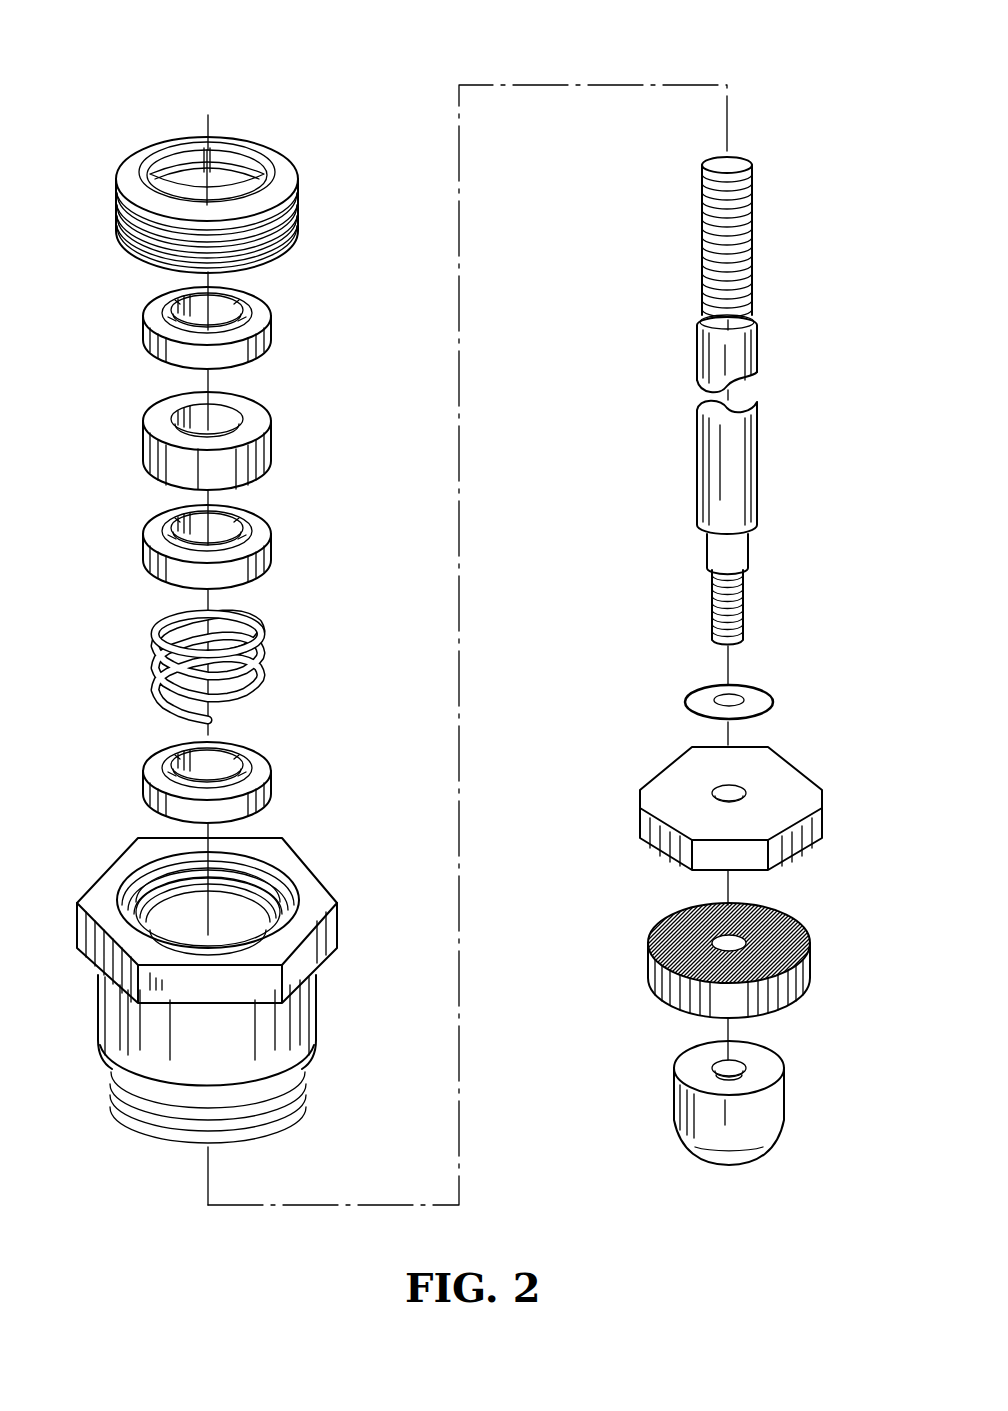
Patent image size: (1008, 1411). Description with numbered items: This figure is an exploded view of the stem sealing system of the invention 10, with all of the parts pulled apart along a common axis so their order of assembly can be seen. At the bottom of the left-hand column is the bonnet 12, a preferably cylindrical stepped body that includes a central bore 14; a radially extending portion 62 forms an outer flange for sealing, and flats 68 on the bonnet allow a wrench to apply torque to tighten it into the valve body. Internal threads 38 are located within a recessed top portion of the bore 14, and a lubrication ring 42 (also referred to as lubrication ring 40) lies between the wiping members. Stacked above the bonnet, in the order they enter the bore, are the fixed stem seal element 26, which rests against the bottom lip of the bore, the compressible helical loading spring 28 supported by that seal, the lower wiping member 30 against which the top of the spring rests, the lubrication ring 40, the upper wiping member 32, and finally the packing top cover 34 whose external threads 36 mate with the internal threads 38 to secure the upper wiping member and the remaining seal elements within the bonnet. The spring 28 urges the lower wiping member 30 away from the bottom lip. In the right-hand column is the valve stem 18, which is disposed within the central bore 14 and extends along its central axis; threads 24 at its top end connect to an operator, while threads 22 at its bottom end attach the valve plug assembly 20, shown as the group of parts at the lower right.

The invention 10 is at (162, 106).
The bonnet 12 is at (323, 1022).
The central bore 14 is at (226, 940).
The valve stem 18 is at (757, 443).
The valve plug assembly 20 is at (792, 684).
The threads 22 is at (745, 600).
The threads 24 is at (752, 208).
The fixed stem seal element 26 is at (272, 782).
The loading spring 28 is at (266, 656).
The lower wiping member 30 is at (272, 550).
The upper wiping member 32 is at (272, 322).
The packing top cover 34 is at (278, 168).
The external threads 36 is at (307, 206).
The internal threads 38 is at (236, 856).
The lubrication ring 40 is at (272, 430).
The lubrication ring 42 is at (205, 943).
The radially extending portion 62 is at (100, 898).
The flats 68 is at (318, 945).